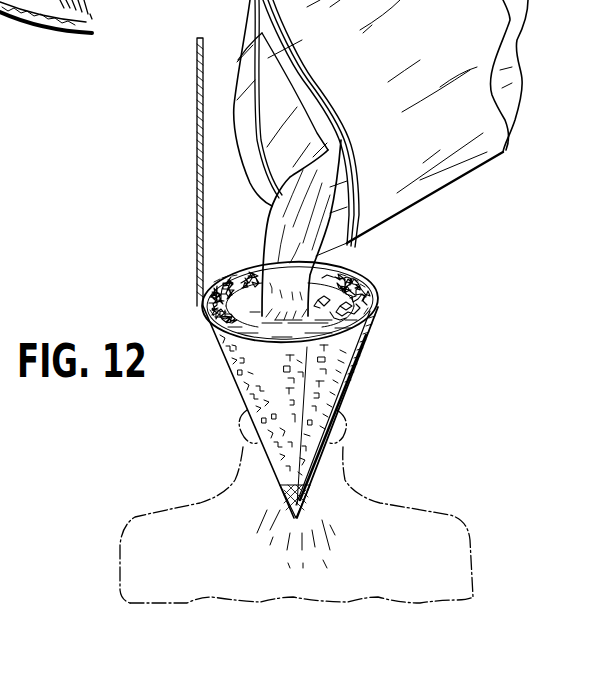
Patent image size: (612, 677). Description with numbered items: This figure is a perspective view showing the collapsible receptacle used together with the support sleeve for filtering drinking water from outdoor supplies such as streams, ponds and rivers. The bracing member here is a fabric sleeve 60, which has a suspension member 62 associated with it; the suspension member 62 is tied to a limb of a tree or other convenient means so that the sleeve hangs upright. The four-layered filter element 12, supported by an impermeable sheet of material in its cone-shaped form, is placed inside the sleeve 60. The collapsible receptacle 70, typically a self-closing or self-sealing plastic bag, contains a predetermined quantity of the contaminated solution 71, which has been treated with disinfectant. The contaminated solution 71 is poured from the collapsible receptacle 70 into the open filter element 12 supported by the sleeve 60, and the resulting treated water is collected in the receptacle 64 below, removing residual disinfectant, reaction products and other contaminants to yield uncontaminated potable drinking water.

The four-layered filter element 12 is at (347, 302).
The fabric sleeve 60 is at (355, 358).
The suspension member 62 is at (197, 207).
The receptacle 64 is at (386, 504).
The collapsible receptacle 70 is at (455, 160).
The contaminated solution 71 is at (272, 228).